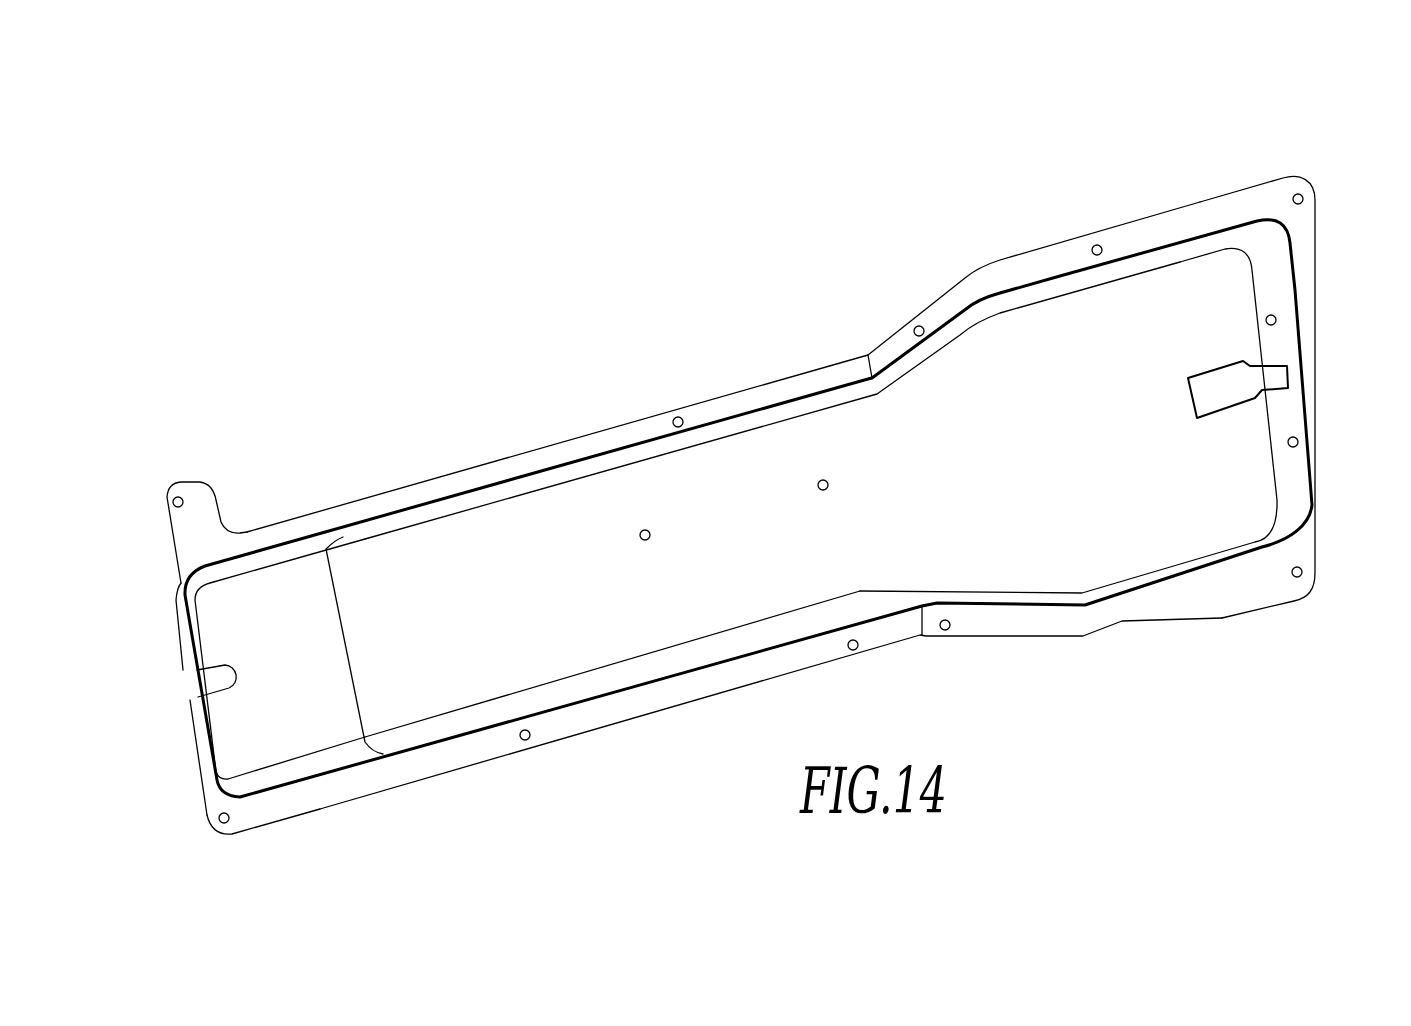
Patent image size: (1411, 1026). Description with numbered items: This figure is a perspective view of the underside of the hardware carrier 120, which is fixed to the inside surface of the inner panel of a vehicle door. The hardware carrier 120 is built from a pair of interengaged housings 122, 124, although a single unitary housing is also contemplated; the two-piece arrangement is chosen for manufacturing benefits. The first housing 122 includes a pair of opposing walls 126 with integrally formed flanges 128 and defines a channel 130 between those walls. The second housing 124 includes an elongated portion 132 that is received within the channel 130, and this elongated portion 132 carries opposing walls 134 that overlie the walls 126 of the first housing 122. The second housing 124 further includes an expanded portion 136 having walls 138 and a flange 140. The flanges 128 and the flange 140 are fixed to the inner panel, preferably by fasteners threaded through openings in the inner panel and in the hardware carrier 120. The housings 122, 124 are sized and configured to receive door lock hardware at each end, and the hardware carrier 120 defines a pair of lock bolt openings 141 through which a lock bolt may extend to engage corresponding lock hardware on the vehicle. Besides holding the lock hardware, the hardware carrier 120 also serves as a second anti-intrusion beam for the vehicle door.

The hardware carrier 120 is at (1242, 164).
The housing 122 is at (150, 614).
The housing 124 is at (1327, 513).
The opposing walls 126 is at (243, 566).
The flanges 128 is at (267, 527).
The channel 130 is at (302, 566).
The elongated portion 132 is at (600, 643).
The opposing walls 134 is at (457, 503).
The expanded portion 136 is at (1132, 552).
The walls 138 is at (1117, 268).
The flange 140 is at (1303, 187).
The lock bolt openings 141 is at (202, 685).